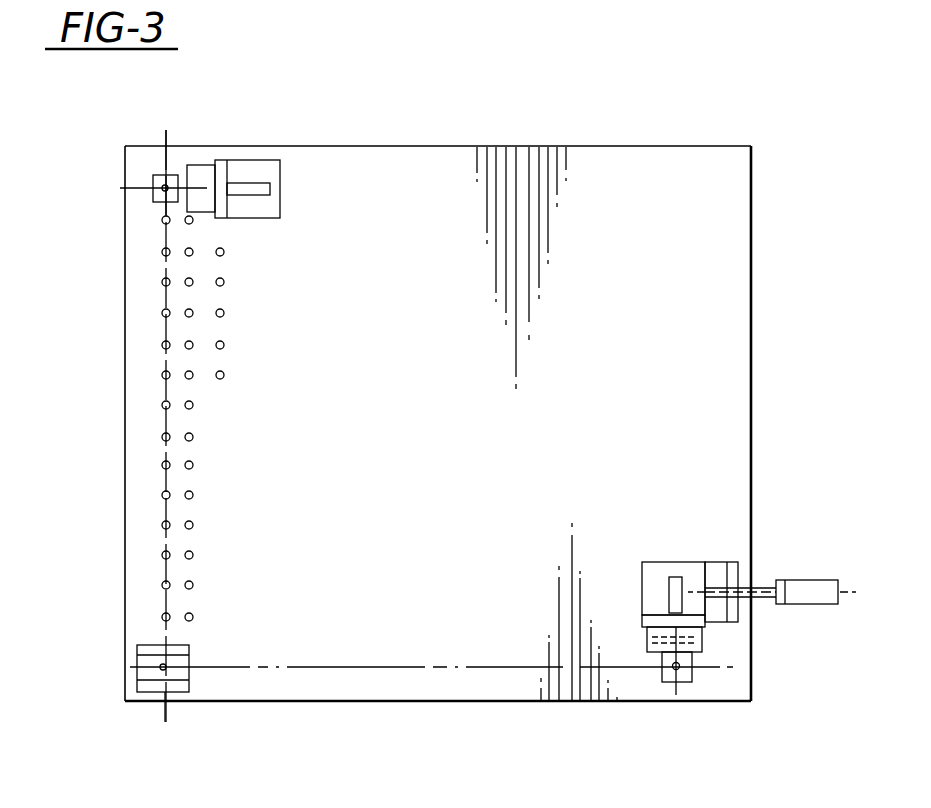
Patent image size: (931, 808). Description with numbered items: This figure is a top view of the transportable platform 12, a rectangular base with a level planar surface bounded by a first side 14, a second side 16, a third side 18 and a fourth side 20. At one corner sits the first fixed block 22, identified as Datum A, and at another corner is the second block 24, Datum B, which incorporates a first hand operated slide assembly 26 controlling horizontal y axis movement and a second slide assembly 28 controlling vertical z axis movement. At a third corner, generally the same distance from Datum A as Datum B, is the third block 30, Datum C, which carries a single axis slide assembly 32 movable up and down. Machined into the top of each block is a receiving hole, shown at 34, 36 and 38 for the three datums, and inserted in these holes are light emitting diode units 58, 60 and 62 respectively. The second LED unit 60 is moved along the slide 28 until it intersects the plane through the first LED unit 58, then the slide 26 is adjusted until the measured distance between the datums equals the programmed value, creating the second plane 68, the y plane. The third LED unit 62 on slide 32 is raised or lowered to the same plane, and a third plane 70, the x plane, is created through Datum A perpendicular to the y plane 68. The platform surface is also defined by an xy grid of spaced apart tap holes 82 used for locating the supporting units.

The transportable platform 12 is at (560, 116).
The first side 14 is at (125, 460).
The second side 16 is at (345, 703).
The third side 18 is at (752, 337).
The fourth side 20 is at (408, 146).
The first fixed block 22 is at (157, 684).
The second block 24 is at (690, 683).
The first hand operated slide assembly 26 is at (813, 580).
The second slide assembly 28 is at (717, 630).
The third block 30 is at (153, 176).
The single axis slide assembly 32 is at (205, 212).
The hole 34 is at (163, 668).
The hole 36 is at (666, 683).
The hole 38 is at (166, 184).
The L.E.D. unit 58 is at (166, 664).
The L.E.D. unit 60 is at (680, 666).
The L.E.D. unit 62 is at (162, 191).
The second plane 68 is at (410, 665).
The third plane 70 is at (163, 360).
The tap holes 82 is at (193, 405).